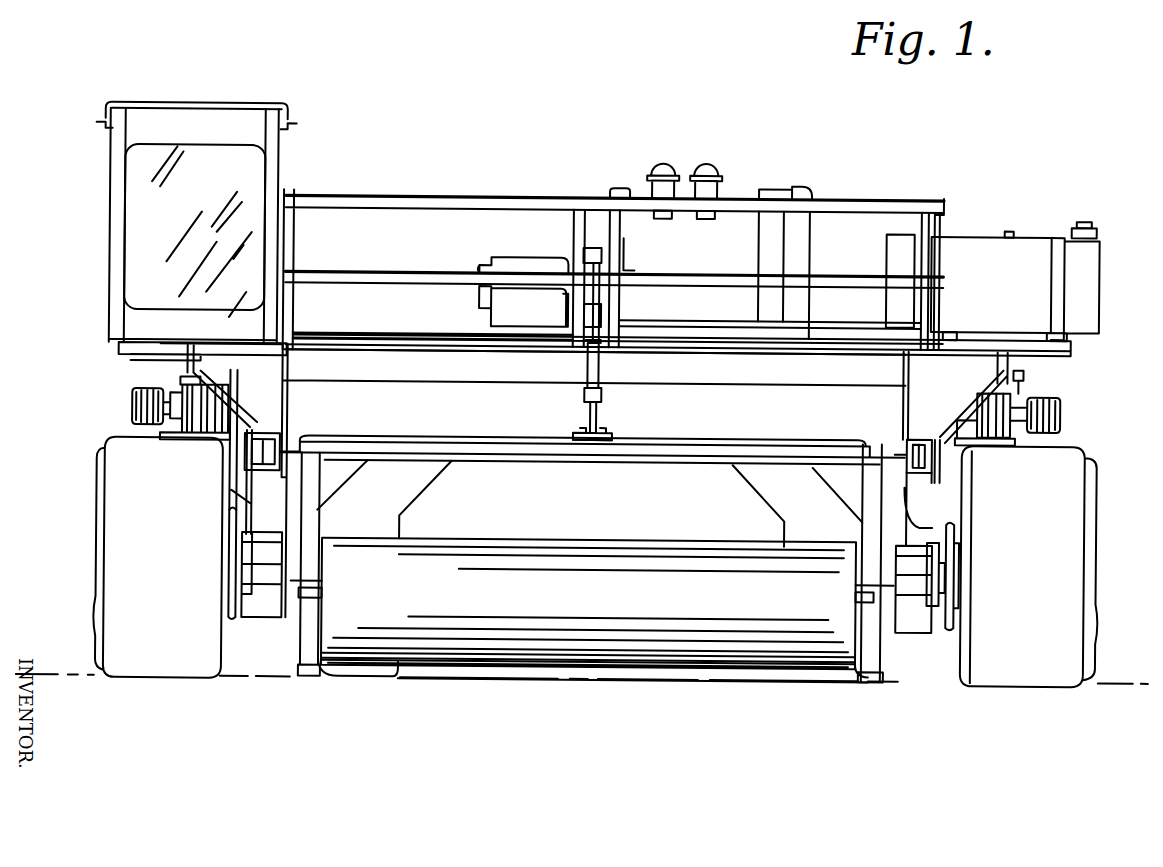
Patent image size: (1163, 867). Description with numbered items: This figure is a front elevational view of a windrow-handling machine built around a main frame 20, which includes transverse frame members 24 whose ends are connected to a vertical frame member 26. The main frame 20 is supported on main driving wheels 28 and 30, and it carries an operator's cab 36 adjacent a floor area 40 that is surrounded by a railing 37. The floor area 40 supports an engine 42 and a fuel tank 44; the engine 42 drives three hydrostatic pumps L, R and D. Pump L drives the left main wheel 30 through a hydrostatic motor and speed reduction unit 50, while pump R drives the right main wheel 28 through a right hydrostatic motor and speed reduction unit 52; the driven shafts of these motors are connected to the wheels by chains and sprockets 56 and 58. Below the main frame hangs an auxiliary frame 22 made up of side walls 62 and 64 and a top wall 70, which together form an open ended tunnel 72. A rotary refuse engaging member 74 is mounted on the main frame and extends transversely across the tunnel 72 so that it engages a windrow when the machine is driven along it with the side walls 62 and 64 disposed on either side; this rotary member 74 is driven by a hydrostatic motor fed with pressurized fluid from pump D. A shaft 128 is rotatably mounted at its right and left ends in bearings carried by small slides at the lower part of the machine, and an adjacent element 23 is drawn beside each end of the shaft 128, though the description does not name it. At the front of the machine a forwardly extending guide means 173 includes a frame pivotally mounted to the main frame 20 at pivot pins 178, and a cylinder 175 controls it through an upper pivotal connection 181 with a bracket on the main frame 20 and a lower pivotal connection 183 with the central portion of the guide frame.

The operator's cab 36 is at (201, 112).
The railing 37 is at (376, 196).
The floor area 40 is at (378, 346).
The engine 42 is at (772, 194).
The fuel tank 44 is at (1024, 242).
The hydrostatic pump L is at (522, 263).
The hydrostatic pump R is at (529, 319).
The hydrostatic pump D is at (517, 349).
The upper pivotal connection 181 is at (584, 350).
The cylinder 175 is at (600, 380).
The lower pivotal connection 183 is at (582, 432).
The main frame 20 is at (324, 361).
The transverse frame members 24 is at (791, 372).
The top wall 70 is at (490, 460).
The guide means 173 is at (466, 442).
The tunnel 72 is at (706, 530).
The refuse engaging member 74 is at (474, 660).
The auxiliary frame 22 is at (794, 680).
The side wall 62 is at (308, 680).
The side wall 64 is at (876, 684).
The drum shaft 23 is at (320, 586).
The shaft 128 is at (320, 598).
The pivot pins 178 is at (264, 434).
The right hydrostatic motor and speed reduction unit 52 is at (154, 392).
The hydrostatic motor and speed reduction unit 50 is at (1014, 414).
The vertical frame member 26 is at (272, 622).
The sprocket 58 is at (228, 674).
The sprocket 56 is at (954, 630).
The main driving wheel 28 is at (124, 450).
The main driving wheel 30 is at (1060, 452).